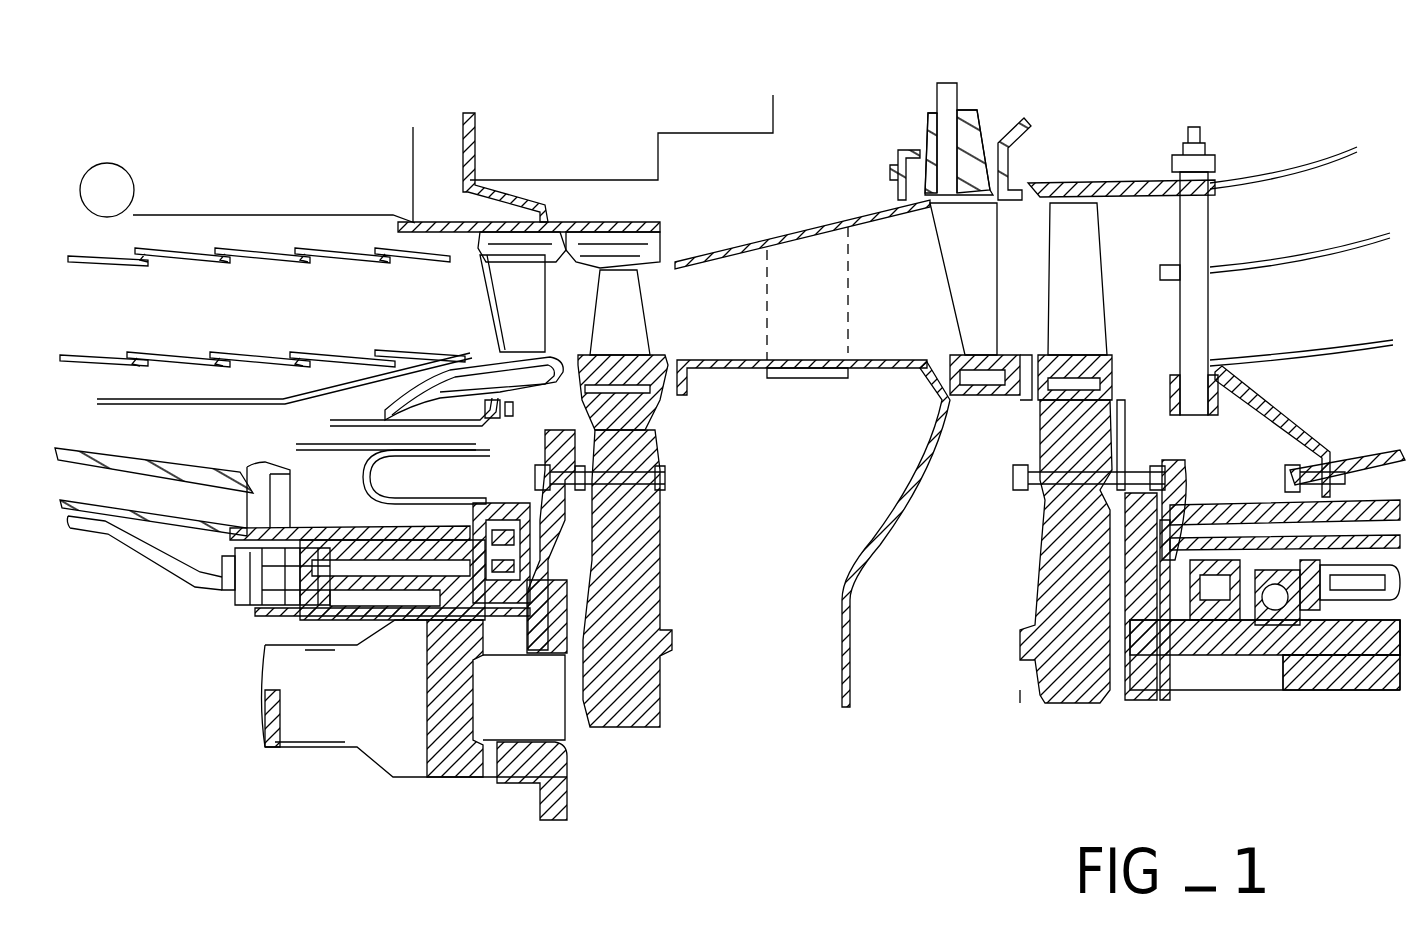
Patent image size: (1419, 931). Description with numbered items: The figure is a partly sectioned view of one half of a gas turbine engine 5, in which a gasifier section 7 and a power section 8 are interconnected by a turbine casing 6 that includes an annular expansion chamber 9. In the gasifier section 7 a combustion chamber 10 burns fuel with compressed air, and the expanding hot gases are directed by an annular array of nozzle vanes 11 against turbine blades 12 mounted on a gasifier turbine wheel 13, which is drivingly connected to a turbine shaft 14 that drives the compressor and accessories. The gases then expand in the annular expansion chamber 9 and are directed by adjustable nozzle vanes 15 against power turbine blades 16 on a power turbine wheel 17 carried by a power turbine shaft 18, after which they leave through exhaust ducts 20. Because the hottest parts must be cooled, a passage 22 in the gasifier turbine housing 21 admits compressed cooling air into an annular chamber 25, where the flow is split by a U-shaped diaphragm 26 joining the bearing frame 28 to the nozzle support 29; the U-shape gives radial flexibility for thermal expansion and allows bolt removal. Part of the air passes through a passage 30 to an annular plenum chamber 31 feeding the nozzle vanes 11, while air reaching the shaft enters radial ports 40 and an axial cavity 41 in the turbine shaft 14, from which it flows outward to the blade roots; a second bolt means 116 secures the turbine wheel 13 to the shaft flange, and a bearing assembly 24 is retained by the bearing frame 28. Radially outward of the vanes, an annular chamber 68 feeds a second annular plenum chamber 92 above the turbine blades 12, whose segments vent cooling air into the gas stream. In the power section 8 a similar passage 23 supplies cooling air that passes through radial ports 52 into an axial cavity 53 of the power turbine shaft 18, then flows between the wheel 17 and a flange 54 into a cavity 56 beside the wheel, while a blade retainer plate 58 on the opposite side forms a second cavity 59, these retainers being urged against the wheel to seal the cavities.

The gas turbine engine 5 is at (1166, 108).
The turbine casing 6 is at (808, 149).
The gasifier section 7 is at (338, 139).
The power section 8 is at (1032, 733).
The annular expansion chamber 9 is at (866, 289).
The combustion chamber 10 is at (281, 314).
The nozzle vanes 11 is at (498, 314).
The turbine blades 12 is at (604, 326).
The gasifier turbine wheel 13 is at (605, 689).
The turbine shaft 14 is at (373, 721).
The adjustable nozzle vanes 15 is at (950, 249).
The power turbine blades 16 is at (1061, 314).
The power turbine wheel 17 is at (1053, 621).
The power turbine shaft 18 is at (1385, 640).
The exhaust ducts 20 is at (1127, 249).
The gasifier turbine housing 21 is at (176, 468).
The passage 22 is at (152, 511).
The passage 23 is at (1372, 535).
The front bearing assembly 24 is at (262, 612).
The annular chamber 25 is at (321, 492).
The diaphragm 26 is at (393, 456).
The bearing frame 28 is at (442, 521).
The nozzle support 29 is at (345, 412).
The passage 30 is at (445, 432).
The annular plenum chamber 31 is at (431, 417).
The radial ports 40 is at (492, 625).
The axial cavity 41 is at (538, 714).
The radial ports 52 is at (1200, 622).
The axial cavity 53 is at (1234, 682).
The flange 54 is at (1172, 515).
The cavity 56 is at (1103, 420).
The blade retainer plate 58 is at (1040, 425).
The second cavity 59 is at (1032, 410).
The annular chamber 68 is at (540, 240).
The second annular plenum chamber 92 is at (632, 247).
The second bolt means 116 is at (535, 477).